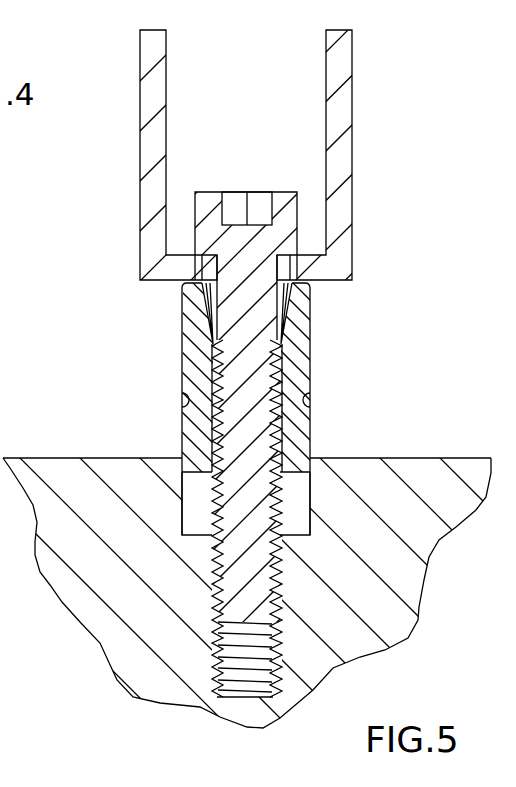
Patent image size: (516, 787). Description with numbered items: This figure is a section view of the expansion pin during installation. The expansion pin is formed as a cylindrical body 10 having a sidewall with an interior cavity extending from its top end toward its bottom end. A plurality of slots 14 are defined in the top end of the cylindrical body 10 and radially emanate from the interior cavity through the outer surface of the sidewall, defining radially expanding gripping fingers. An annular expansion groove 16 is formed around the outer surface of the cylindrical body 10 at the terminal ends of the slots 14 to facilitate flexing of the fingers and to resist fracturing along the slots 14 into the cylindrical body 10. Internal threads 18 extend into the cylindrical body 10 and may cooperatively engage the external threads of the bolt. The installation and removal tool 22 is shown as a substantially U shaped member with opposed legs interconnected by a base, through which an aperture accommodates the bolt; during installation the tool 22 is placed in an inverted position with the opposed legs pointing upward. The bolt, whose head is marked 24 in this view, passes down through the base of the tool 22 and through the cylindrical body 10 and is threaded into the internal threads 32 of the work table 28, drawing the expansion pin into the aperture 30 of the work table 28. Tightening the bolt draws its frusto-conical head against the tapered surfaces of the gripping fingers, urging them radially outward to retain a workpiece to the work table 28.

The cylindrical body 10 is at (307, 370).
The slots 14 is at (205, 285).
The annular expansion groove 16 is at (182, 402).
The internal threads 18 is at (213, 428).
The installation and removal tool 22 is at (327, 50).
The bolt 24 is at (282, 198).
The work table 28 is at (62, 468).
The aperture 30 is at (303, 490).
The internal threads 32 is at (217, 672).